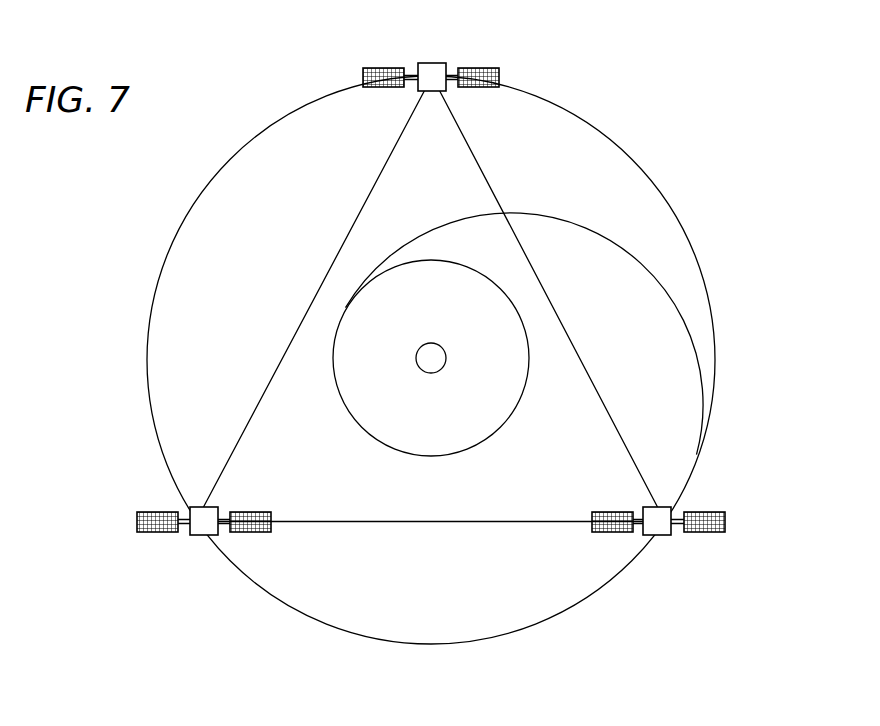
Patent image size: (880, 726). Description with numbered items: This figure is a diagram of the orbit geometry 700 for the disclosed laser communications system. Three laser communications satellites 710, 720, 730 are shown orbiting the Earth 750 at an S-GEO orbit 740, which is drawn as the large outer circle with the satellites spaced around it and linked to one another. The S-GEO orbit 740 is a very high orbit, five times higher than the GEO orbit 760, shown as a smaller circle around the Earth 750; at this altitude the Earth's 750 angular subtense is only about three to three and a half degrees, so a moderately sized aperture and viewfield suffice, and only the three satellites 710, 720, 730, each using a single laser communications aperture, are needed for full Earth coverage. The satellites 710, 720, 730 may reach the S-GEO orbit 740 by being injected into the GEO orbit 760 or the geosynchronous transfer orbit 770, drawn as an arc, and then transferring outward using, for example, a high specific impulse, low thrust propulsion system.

The orbit geometry 700 is at (660, 143).
The laser communications satellite 710 is at (470, 67).
The laser communications satellite 720 is at (167, 533).
The laser communications satellite 730 is at (698, 531).
The S-GEO orbit 740 is at (488, 637).
The Earth 750 is at (430, 344).
The GEO orbit 760 is at (375, 437).
The geosynchronous transfer orbit 770 is at (583, 228).